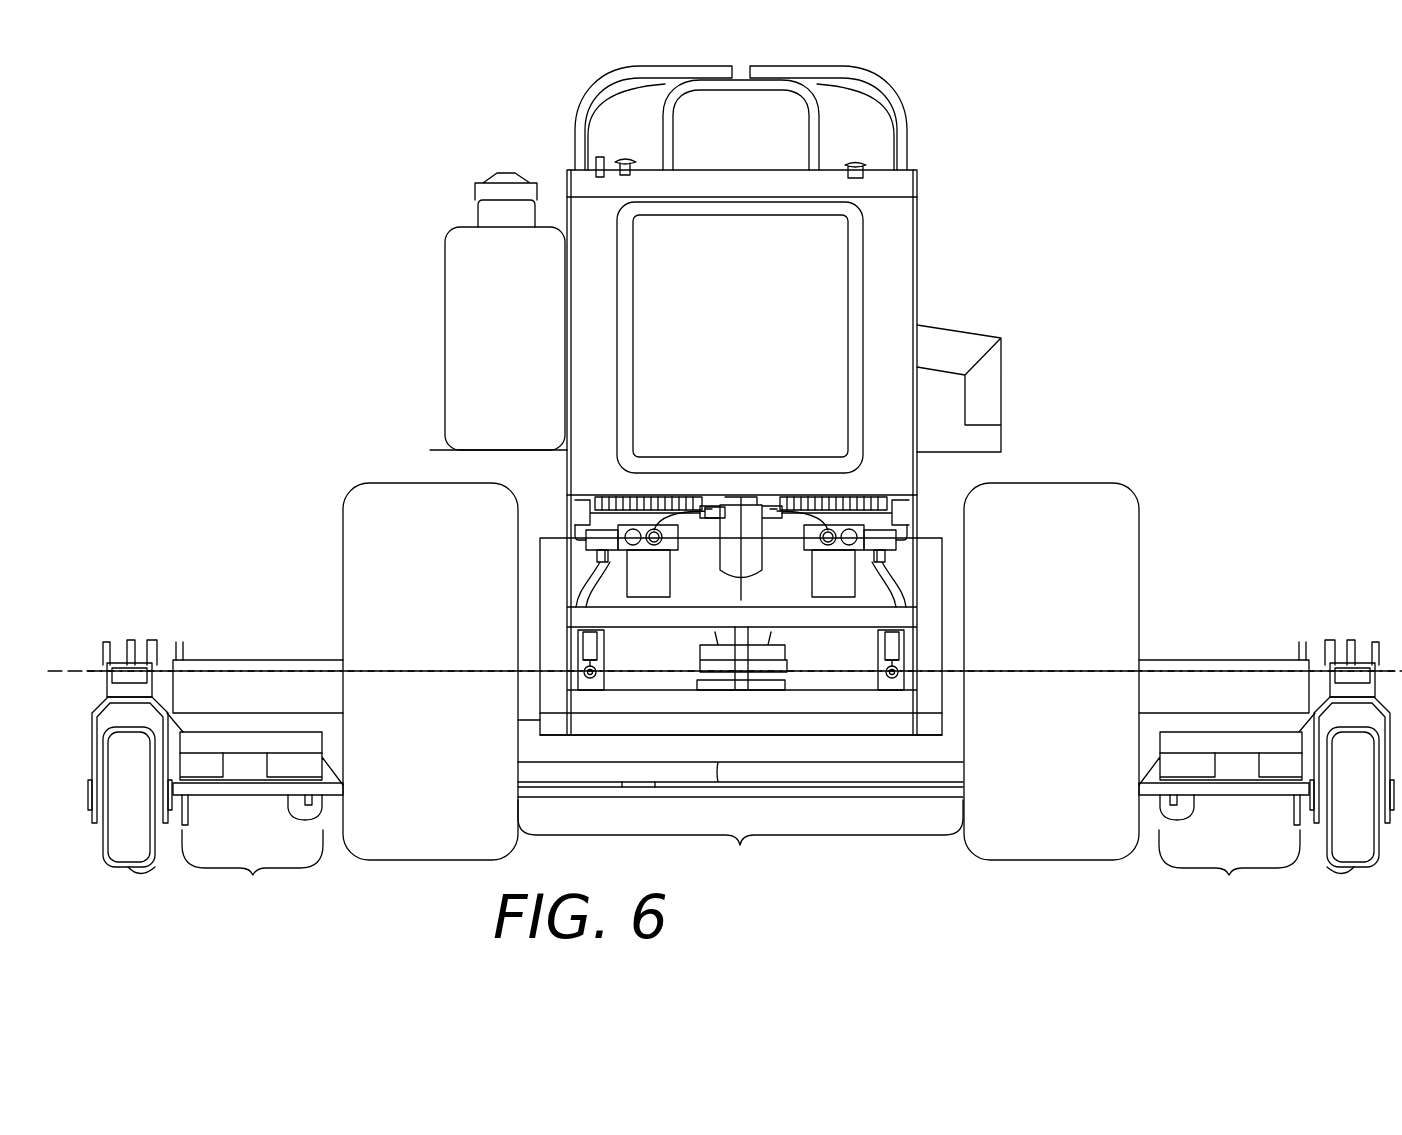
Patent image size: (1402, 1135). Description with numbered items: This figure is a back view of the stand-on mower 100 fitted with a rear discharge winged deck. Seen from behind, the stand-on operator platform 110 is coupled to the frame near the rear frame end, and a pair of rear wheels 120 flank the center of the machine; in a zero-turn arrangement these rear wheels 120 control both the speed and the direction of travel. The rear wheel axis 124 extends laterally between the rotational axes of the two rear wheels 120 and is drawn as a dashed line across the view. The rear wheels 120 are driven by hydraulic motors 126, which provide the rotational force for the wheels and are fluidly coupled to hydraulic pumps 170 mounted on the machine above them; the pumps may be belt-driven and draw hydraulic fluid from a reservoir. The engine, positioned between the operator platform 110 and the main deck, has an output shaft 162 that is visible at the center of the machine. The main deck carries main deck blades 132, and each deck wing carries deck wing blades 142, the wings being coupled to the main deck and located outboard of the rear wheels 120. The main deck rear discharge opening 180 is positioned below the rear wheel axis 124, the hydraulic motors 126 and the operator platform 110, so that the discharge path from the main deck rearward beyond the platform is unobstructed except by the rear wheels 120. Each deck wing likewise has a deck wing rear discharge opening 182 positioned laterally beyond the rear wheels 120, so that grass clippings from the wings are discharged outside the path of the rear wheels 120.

The mower 100 is at (1184, 229).
The stand-on operator platform 110 is at (898, 722).
The rear wheels 120 is at (345, 545).
The rear wheel axis 124 is at (65, 668).
The hydraulic motors 126 is at (588, 660).
The main deck blades 132 is at (812, 797).
The deck wing blades 142 is at (237, 790).
The output shaft 162 is at (760, 637).
The hydraulic pumps 170 is at (648, 525).
The main deck rear discharge opening 180 is at (740, 840).
The deck wing rear discharge openings 182 is at (253, 872).